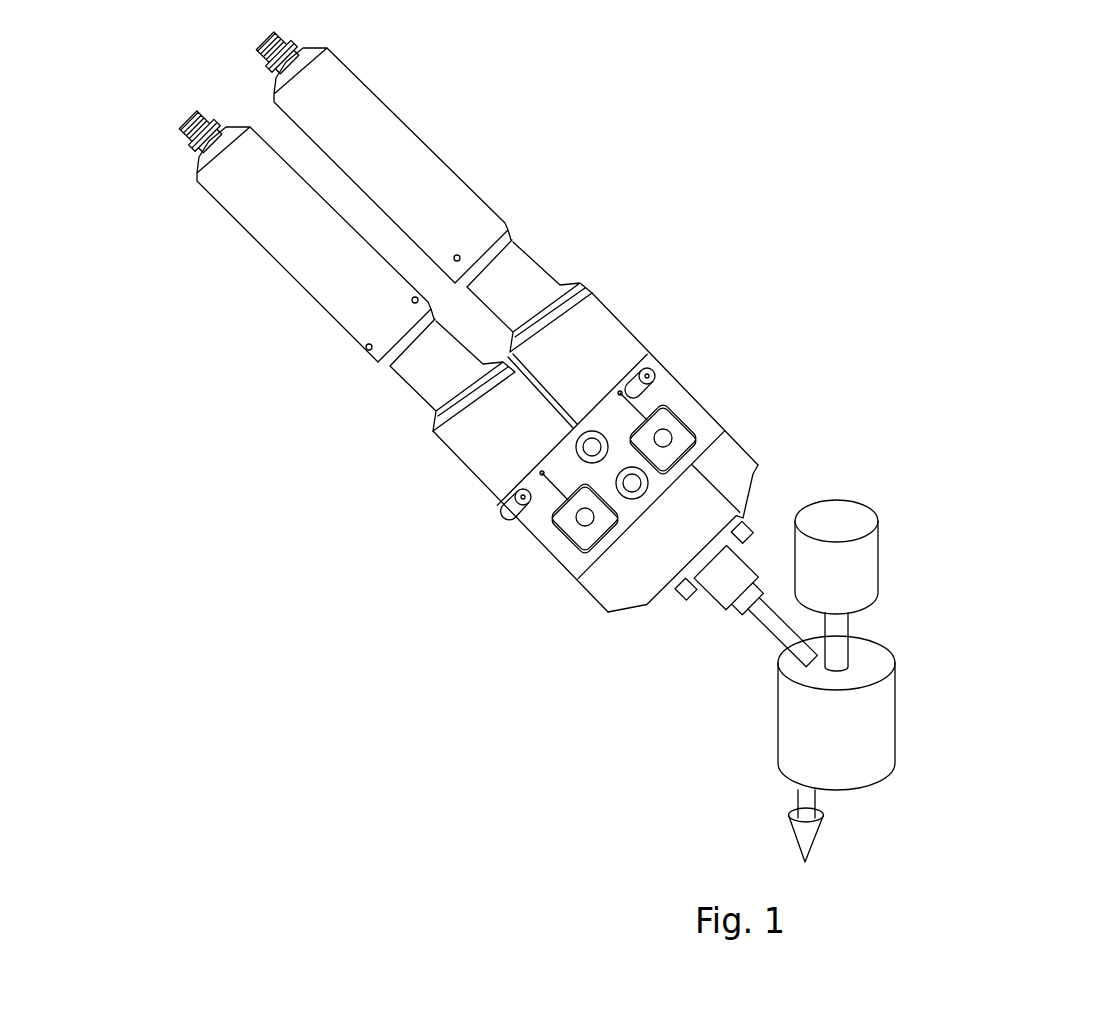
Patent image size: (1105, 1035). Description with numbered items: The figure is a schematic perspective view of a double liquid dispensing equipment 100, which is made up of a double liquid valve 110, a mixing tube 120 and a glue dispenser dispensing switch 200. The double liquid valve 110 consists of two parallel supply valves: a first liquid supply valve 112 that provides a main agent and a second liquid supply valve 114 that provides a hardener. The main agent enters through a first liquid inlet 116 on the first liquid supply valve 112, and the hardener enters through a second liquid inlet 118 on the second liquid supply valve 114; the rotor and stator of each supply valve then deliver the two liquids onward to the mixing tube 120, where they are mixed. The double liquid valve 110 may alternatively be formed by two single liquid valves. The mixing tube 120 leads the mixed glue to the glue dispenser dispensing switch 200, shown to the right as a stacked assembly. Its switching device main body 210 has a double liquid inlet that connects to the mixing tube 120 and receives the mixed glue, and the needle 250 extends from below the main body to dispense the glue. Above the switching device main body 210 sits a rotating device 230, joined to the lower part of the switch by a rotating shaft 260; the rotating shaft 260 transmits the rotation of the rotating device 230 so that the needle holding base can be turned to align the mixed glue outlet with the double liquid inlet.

The double liquid dispensing equipment 100 is at (101, 47).
The double liquid valve 110 is at (228, 297).
The first liquid supply valve 112 is at (480, 457).
The second liquid supply valve 114 is at (607, 335).
The first liquid inlet 116 is at (568, 528).
The second liquid inlet 118 is at (672, 423).
The mixing tube 120 is at (718, 587).
The glue dispenser dispensing switch 200 is at (962, 610).
The switching device main body 210 is at (873, 708).
The rotating device 230 is at (860, 562).
The needle 250 is at (808, 837).
The rotating shaft 260 is at (838, 625).